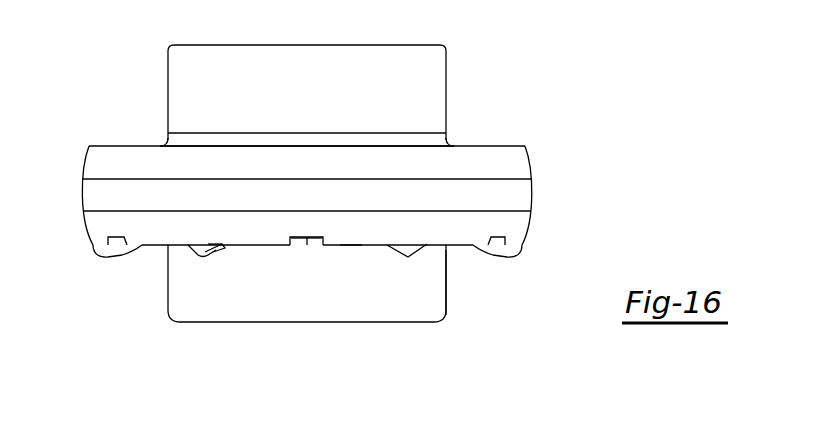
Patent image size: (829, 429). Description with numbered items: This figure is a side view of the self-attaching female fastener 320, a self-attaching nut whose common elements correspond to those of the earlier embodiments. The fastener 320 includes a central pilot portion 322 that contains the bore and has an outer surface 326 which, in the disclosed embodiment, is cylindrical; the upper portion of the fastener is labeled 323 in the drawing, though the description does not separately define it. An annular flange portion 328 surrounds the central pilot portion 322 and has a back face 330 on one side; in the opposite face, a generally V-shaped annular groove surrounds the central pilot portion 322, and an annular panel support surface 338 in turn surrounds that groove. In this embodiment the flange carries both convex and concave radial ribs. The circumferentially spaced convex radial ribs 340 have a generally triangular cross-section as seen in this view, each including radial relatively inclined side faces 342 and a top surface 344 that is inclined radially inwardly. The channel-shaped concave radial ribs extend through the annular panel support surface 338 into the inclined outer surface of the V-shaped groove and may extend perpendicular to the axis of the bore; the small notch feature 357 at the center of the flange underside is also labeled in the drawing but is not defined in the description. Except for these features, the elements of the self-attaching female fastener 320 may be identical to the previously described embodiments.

The self-attaching female fastener 320 is at (131, 92).
The central pilot portion 322 is at (203, 321).
The upper housing portion 323 is at (452, 82).
The outer surface 326 is at (445, 283).
The annular flange portion 328 is at (483, 177).
The back face 330 is at (488, 146).
The annular panel support surface 338 is at (351, 247).
The convex radial ribs 340 is at (104, 264).
The radial relatively inclined side faces 342 is at (216, 250).
The top surface 344 is at (408, 257).
The slot 357 is at (307, 245).